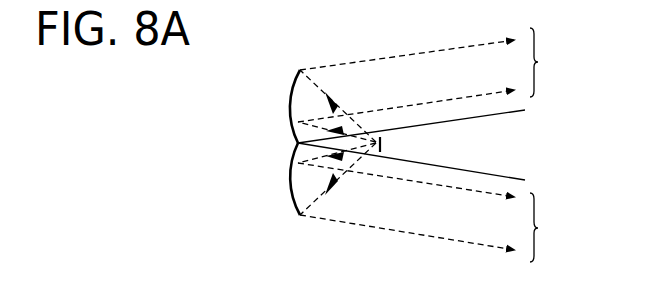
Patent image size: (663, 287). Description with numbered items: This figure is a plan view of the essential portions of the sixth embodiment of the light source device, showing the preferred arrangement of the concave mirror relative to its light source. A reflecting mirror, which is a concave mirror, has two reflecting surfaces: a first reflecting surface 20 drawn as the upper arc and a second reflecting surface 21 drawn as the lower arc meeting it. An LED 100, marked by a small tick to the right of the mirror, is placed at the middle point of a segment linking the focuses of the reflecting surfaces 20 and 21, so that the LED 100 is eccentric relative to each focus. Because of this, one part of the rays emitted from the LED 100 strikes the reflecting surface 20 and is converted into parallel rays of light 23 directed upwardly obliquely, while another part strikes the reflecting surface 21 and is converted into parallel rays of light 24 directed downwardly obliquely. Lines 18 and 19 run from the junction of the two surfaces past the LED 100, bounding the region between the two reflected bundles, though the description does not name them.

The upper boundary line of light emission 18 is at (430, 120).
The lower boundary line of light emission 19 is at (429, 168).
The first reflecting surface 20 is at (291, 95).
The second reflecting surface 21 is at (291, 198).
The parallel rays of light 23 is at (436, 75).
The parallel rays of light 24 is at (436, 212).
The LED 100 is at (383, 143).